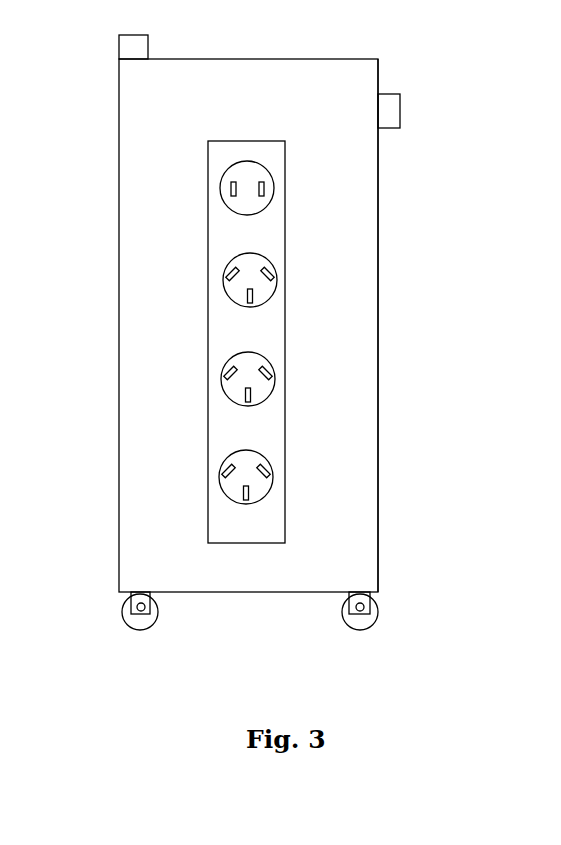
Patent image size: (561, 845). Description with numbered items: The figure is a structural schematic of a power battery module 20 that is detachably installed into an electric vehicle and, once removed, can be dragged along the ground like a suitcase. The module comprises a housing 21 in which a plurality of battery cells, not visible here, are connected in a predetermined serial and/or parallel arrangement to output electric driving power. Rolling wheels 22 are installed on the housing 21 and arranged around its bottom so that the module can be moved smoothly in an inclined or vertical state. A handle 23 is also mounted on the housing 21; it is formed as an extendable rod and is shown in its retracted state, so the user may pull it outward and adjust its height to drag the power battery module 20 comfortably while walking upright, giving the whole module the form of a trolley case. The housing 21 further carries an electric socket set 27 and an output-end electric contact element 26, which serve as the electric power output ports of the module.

The power battery module 20 is at (358, 315).
The housing 21 is at (378, 214).
The rolling wheels 22 is at (378, 617).
The handle 23 is at (119, 48).
The output-end electric contact element 26 is at (400, 118).
The electric socket set 27 is at (208, 468).